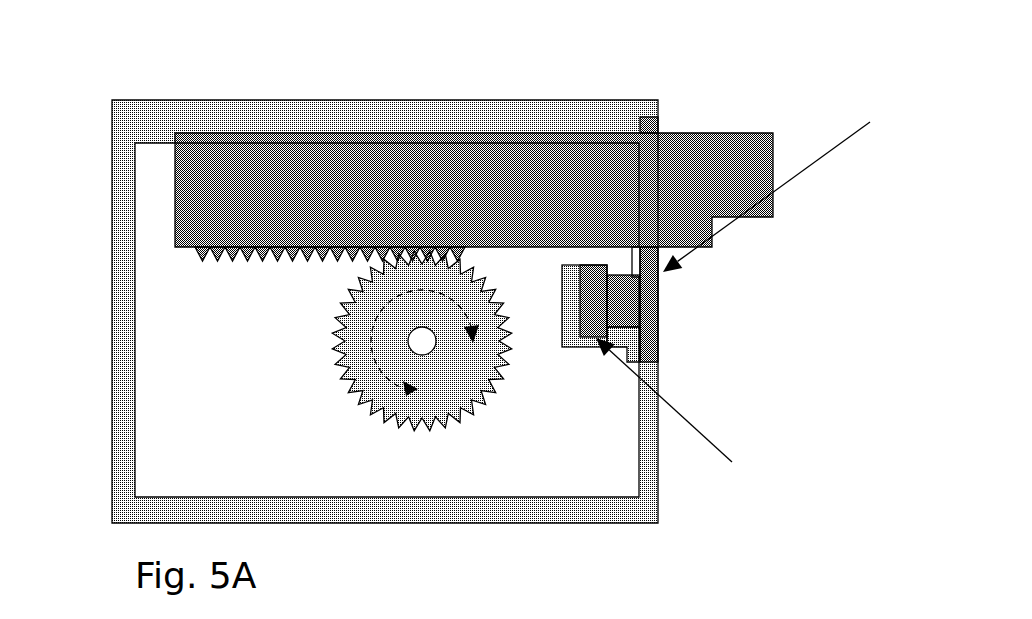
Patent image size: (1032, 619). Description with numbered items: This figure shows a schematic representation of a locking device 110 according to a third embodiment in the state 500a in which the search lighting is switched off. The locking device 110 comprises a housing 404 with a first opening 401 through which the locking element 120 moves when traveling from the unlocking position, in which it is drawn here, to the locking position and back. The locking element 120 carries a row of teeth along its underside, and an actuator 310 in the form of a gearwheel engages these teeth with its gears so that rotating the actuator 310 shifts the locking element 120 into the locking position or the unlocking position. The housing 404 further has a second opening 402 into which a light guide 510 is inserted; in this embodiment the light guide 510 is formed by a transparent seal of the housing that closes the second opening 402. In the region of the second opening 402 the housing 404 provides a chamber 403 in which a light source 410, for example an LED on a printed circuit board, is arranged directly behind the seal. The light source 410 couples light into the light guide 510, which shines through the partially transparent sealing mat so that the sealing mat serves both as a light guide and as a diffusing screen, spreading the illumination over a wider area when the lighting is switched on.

The locking assembly 500a is at (141, 64).
The locking device 110 is at (260, 78).
The locking element 120 is at (377, 124).
The actuator 310 is at (358, 417).
The first opening 401 is at (678, 118).
The second opening 402 is at (670, 322).
The chamber 403 is at (576, 374).
The housing 404 is at (470, 535).
The light source 410 is at (684, 421).
The light guide 510 is at (785, 182).